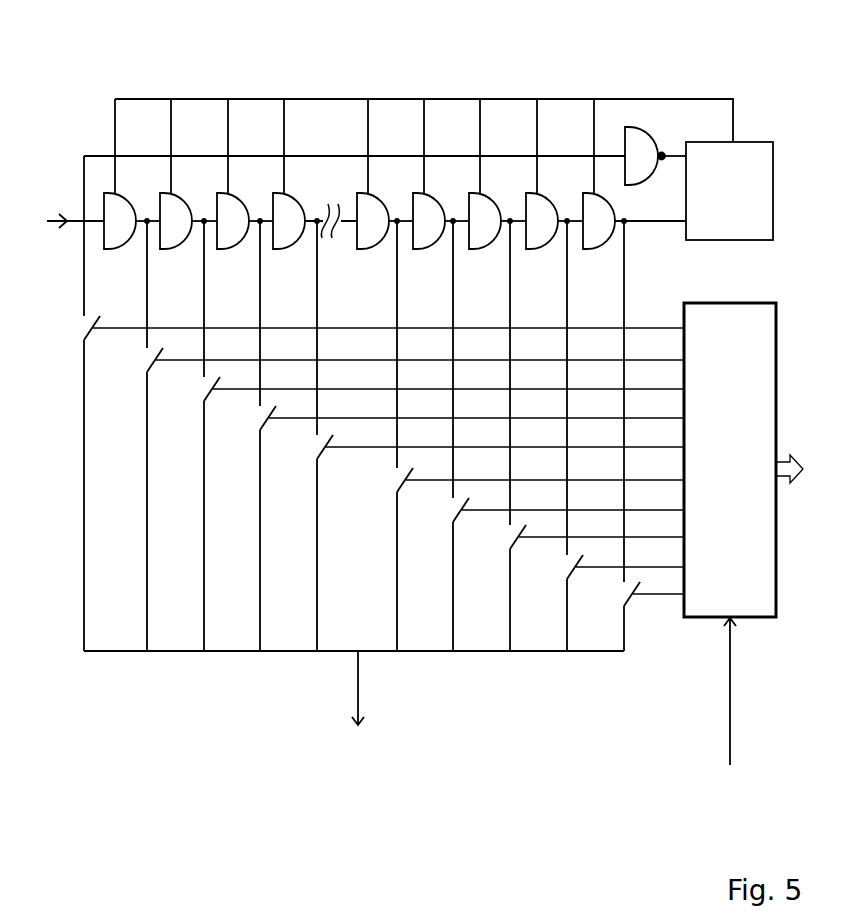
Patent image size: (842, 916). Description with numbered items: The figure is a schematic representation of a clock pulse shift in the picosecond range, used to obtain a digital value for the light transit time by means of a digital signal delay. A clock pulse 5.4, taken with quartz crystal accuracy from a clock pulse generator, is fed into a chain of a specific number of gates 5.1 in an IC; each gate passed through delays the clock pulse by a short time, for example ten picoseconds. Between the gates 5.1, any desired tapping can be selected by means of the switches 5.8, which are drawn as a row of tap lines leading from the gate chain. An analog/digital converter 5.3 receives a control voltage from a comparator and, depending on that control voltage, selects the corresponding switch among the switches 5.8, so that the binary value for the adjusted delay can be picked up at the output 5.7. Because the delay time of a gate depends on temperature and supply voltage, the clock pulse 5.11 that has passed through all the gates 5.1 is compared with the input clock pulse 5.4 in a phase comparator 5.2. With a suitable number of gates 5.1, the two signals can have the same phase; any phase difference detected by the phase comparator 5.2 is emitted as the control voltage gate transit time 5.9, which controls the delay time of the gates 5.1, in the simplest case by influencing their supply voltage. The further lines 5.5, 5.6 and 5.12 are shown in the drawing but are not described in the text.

The gates 5.1 is at (121, 205).
The phase comparator 5.2 is at (729, 191).
The analog/digital converter 5.3 is at (730, 460).
The clock pulse 5.4 is at (42, 212).
The output line 5.5 is at (351, 702).
The ADC control input 5.6 is at (733, 706).
The output 5.7 is at (804, 465).
The switches 5.8 is at (195, 391).
The control voltage gate transit time 5.9 is at (502, 93).
The clock pulse 5.11 is at (674, 226).
The NAND gate feedback 5.12 is at (675, 148).